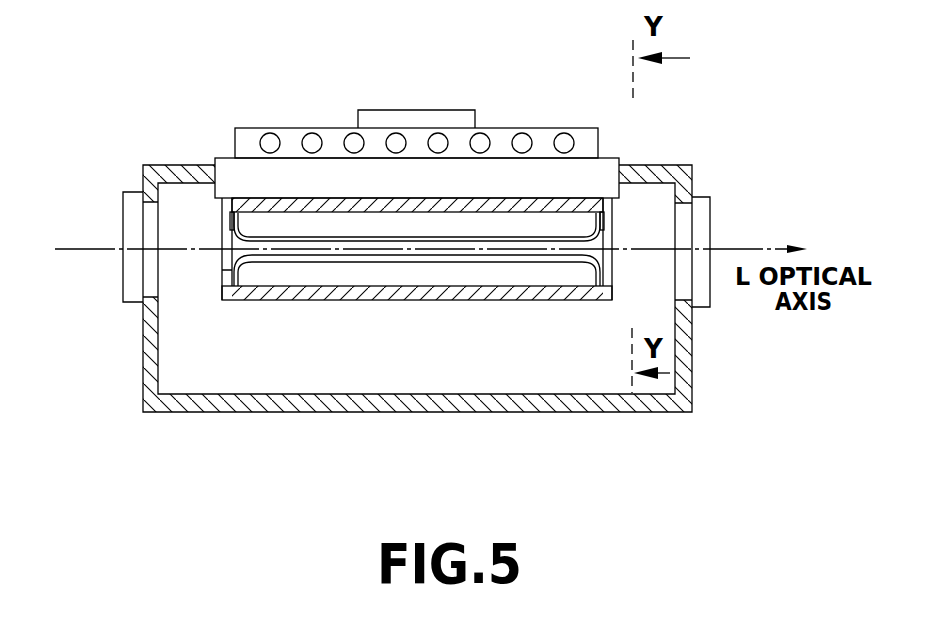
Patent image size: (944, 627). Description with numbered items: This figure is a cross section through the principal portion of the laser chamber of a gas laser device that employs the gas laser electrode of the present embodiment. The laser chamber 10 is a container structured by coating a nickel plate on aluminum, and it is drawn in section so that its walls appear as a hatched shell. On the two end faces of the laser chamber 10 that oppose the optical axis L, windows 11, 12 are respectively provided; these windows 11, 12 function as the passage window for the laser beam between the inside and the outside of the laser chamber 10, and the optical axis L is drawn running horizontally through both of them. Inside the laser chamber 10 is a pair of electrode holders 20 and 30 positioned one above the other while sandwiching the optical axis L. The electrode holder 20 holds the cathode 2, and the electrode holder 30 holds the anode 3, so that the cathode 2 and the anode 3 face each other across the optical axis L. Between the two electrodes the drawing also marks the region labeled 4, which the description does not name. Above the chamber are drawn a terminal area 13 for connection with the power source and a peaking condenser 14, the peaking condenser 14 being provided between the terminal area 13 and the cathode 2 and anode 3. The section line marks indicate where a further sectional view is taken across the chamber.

The cathode 2 is at (245, 222).
The anode 3 is at (278, 273).
The light shielding plate 4 is at (404, 272).
The laser chamber 10 is at (248, 401).
The window 11 is at (703, 203).
The window 12 is at (128, 287).
The terminal area 13 is at (455, 118).
The peaking condenser 14 is at (565, 138).
The electrode holder 20 is at (613, 207).
The electrode holder 30 is at (572, 290).